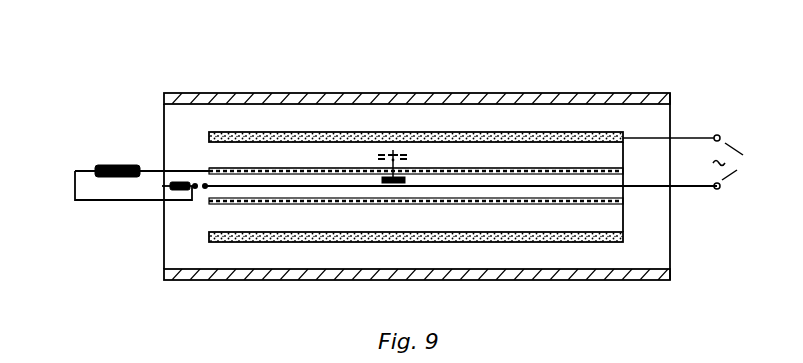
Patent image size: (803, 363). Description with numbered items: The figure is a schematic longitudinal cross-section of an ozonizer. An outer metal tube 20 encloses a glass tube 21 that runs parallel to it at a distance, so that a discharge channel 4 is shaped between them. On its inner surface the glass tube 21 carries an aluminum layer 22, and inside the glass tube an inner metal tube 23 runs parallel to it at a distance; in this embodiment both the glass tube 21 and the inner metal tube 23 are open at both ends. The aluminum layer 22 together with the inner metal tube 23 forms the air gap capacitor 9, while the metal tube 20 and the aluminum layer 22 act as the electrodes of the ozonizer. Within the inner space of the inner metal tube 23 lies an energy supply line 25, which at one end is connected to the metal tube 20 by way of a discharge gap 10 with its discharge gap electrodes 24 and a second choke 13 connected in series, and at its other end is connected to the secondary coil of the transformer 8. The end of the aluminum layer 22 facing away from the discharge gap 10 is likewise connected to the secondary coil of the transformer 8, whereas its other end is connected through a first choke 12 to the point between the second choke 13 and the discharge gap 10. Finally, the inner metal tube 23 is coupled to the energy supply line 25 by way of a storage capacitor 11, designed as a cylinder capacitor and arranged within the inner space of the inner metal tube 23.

The discharge channel 4 is at (607, 120).
The metal tube 20 is at (248, 98).
The glass tube 21 is at (278, 132).
The aluminum layer 22 is at (498, 133).
The inner metal tube 23 is at (567, 167).
The energy supply line 25 is at (597, 187).
The storage capacitor 11 is at (405, 178).
The air gap capacitor 9 is at (387, 148).
The transformer 8 is at (695, 162).
The first choke 12 is at (110, 163).
The second choke 13 is at (177, 180).
The discharge gap electrodes 24 is at (192, 190).
The discharge gap 10 is at (198, 192).